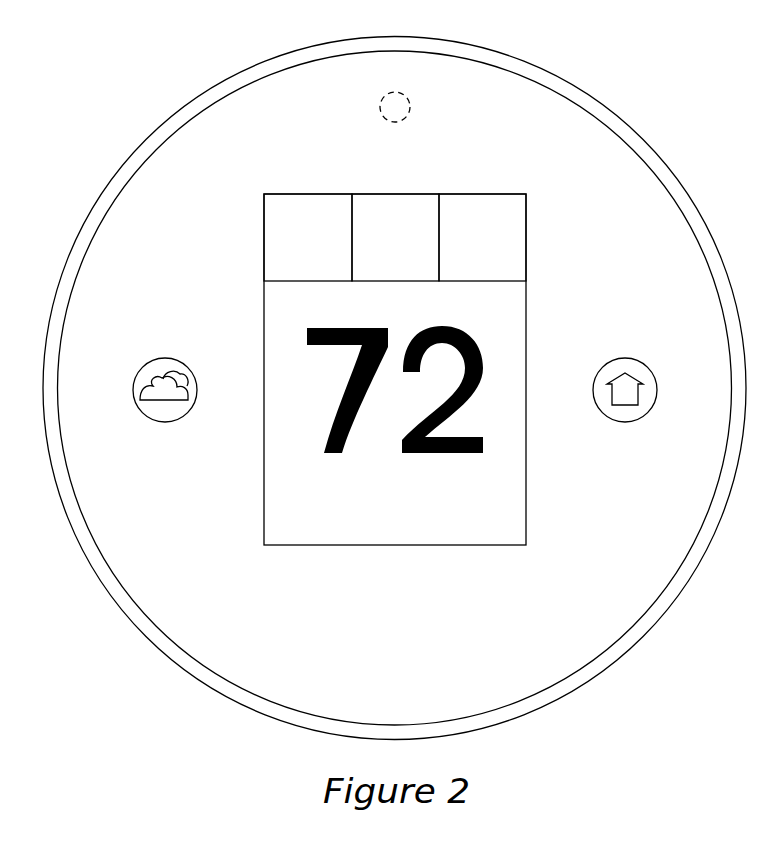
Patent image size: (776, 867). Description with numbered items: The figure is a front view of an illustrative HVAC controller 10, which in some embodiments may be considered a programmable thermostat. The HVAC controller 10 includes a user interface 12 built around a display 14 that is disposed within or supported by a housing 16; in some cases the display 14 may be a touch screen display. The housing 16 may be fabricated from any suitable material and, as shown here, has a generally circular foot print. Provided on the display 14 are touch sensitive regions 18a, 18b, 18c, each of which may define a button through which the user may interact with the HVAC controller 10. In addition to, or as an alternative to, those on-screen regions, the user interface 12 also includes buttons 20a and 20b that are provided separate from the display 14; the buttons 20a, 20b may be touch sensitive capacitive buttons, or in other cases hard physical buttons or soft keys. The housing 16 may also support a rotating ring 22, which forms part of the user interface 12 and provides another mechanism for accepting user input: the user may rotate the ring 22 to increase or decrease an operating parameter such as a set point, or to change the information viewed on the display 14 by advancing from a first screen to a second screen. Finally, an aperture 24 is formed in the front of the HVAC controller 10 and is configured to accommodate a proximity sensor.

The HVAC controller 10 is at (679, 73).
The user interface 12 is at (650, 580).
The display 14 is at (388, 530).
The housing 16 is at (685, 187).
The touch sensitive region 18a is at (305, 200).
The touch sensitive region 18b is at (393, 200).
The touch sensitive region 18c is at (482, 200).
The button 20a is at (156, 362).
The button 20b is at (634, 362).
The rotating ring 22 is at (148, 138).
The aperture 24 is at (410, 104).